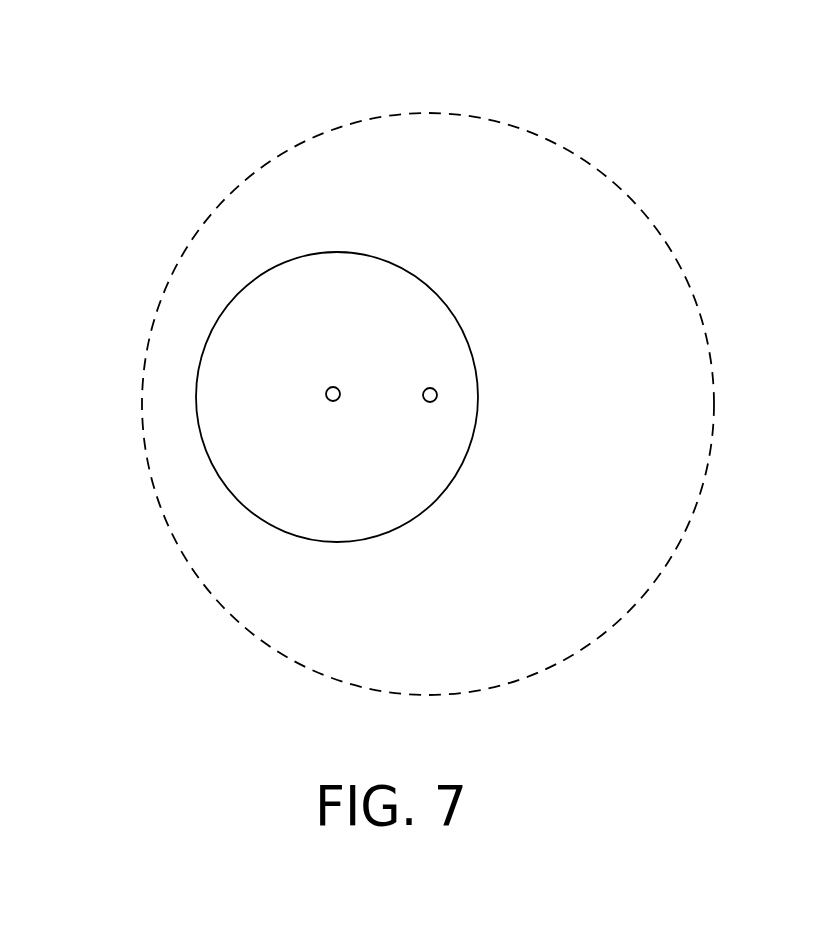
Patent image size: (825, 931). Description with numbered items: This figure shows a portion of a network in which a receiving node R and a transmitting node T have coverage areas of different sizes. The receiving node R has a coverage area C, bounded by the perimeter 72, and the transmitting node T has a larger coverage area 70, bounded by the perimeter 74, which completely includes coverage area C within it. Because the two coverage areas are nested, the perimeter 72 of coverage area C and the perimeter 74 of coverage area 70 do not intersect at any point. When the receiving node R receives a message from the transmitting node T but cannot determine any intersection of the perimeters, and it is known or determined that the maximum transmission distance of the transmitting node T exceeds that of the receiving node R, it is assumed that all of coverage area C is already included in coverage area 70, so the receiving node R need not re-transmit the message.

The coverage area of transmitting node 70 is at (527, 172).
The perimeter of coverage area C 72 is at (305, 253).
The perimeter of coverage area 70 74 is at (257, 165).
The coverage area C is at (373, 282).
The receiving node R is at (332, 401).
The transmitting node T is at (434, 401).